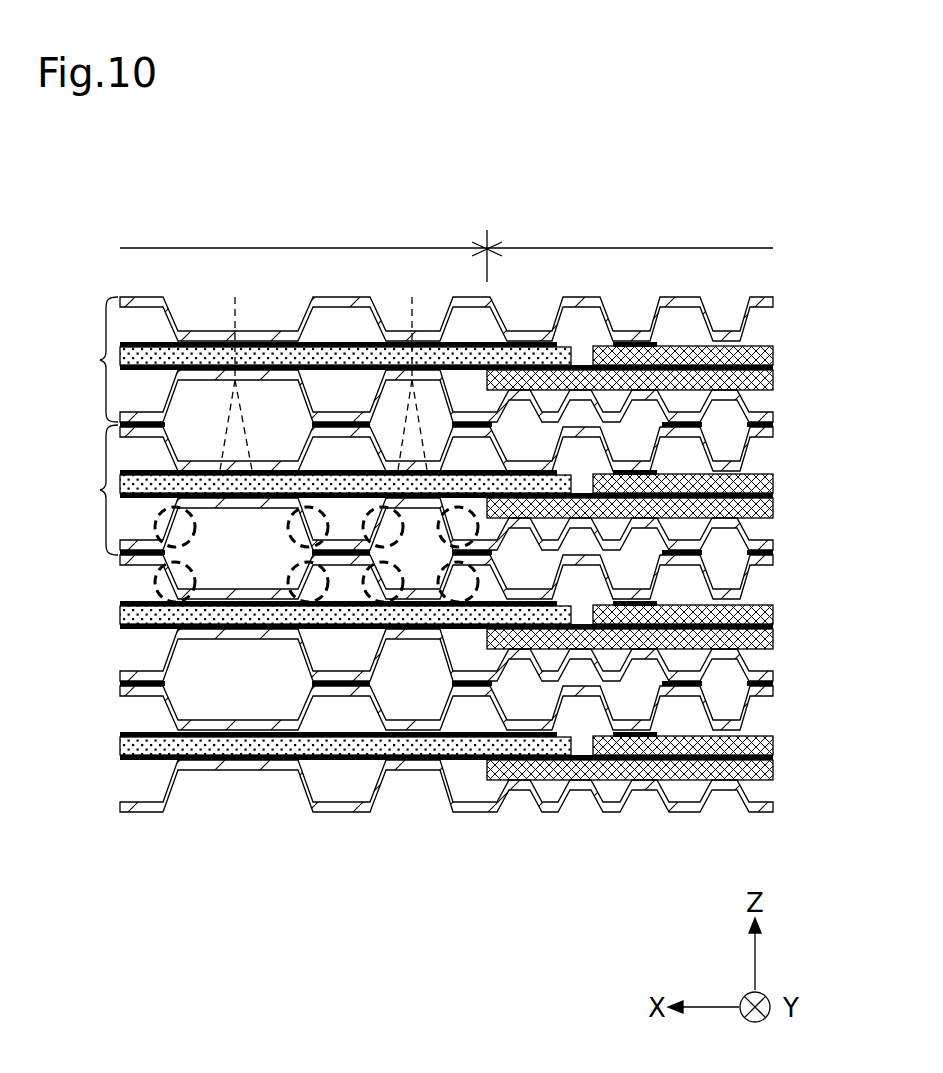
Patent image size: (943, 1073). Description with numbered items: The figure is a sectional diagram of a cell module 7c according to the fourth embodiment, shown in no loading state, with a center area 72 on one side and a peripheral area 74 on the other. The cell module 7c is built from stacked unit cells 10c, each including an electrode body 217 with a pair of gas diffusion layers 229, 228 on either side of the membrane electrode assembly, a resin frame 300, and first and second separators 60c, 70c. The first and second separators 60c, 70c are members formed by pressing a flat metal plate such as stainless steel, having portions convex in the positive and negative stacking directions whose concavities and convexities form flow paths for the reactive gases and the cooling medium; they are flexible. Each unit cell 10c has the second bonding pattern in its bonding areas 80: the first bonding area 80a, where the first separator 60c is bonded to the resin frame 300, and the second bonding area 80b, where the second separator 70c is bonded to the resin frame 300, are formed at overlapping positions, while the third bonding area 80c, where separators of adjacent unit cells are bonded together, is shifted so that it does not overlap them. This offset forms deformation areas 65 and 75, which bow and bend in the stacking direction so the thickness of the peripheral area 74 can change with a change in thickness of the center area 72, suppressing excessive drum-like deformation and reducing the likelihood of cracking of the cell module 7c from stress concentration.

The cell module 7c is at (127, 198).
The peripheral area 74 is at (311, 250).
The center area 72 is at (630, 233).
The deformation area 75 is at (327, 370).
The electrode body 217 is at (779, 363).
The unit cell 10c is at (415, 426).
The deformation area 65 is at (460, 590).
The first separator 60c is at (120, 566).
The resin frame 300 is at (120, 617).
The second separator 70c is at (120, 685).
The bonding area 80 is at (446, 729).
The first bonding area 80a is at (210, 590).
The second bonding area 80b is at (258, 592).
The third bonding area 80c is at (148, 562).
The gas diffusion layer 229 is at (648, 786).
The gas diffusion layer 228 is at (690, 780).